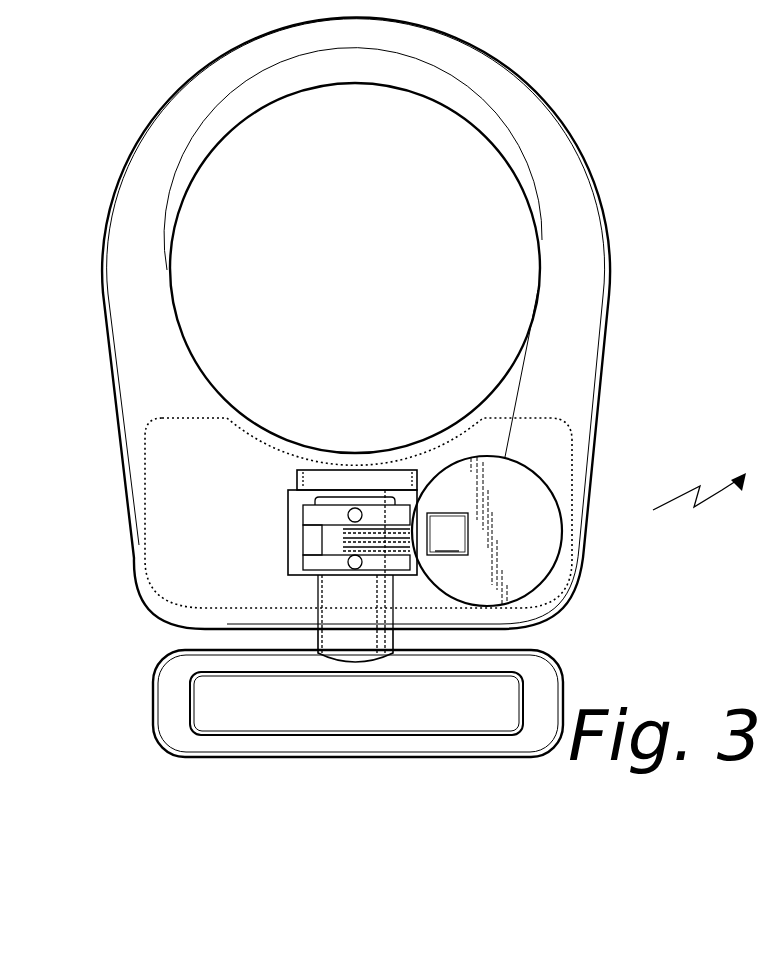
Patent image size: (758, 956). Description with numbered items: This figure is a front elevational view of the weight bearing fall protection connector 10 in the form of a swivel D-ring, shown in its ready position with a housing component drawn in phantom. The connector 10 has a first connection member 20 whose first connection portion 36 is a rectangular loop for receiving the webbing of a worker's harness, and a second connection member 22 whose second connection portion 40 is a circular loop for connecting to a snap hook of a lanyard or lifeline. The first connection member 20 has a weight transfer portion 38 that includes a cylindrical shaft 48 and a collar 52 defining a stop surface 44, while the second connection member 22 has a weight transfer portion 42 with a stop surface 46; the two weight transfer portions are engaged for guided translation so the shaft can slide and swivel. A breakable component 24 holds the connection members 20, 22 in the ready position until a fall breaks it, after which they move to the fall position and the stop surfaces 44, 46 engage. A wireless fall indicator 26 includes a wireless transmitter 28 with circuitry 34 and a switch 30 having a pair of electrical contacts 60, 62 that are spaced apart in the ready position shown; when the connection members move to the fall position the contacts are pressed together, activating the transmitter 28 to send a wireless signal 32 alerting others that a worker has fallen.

The fall protection connector 10 is at (636, 189).
The first connection member 20 is at (580, 660).
The second connection member 22 is at (628, 309).
The breakable component 24 is at (317, 577).
The wireless fall indicator 26 is at (566, 468).
The wireless transmitter 28 is at (533, 545).
The switch 30 is at (305, 538).
The wireless signal 32 is at (720, 490).
The circuitry 34 is at (447, 534).
The first connection portion 36 is at (153, 717).
The weight transfer portion 38 is at (355, 480).
The second connection portion 40 is at (517, 103).
The weight transfer portion 42 is at (355, 570).
The stop surface 44 is at (305, 515).
The stop surface 46 is at (307, 545).
The cylindrical shaft 48 is at (317, 640).
The collar 52 is at (307, 513).
The electrical contact 60 is at (385, 490).
The electrical contact 62 is at (400, 550).